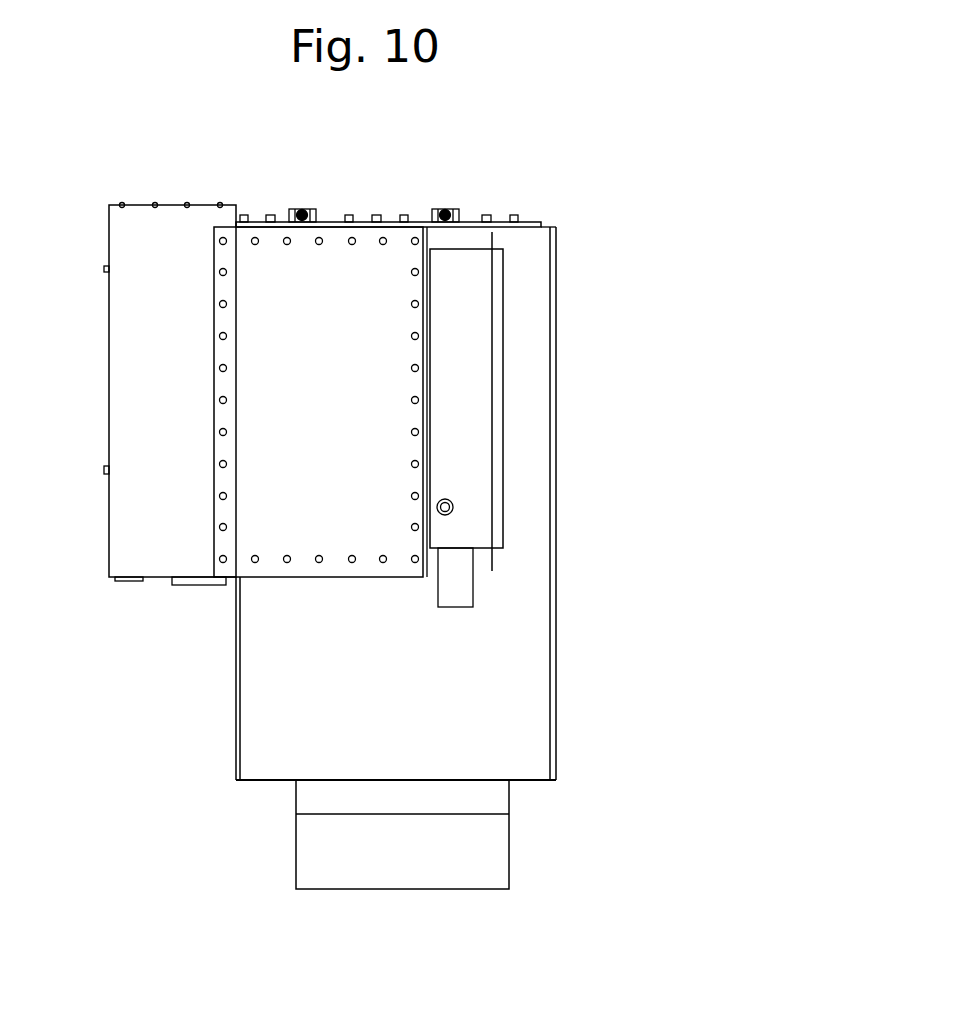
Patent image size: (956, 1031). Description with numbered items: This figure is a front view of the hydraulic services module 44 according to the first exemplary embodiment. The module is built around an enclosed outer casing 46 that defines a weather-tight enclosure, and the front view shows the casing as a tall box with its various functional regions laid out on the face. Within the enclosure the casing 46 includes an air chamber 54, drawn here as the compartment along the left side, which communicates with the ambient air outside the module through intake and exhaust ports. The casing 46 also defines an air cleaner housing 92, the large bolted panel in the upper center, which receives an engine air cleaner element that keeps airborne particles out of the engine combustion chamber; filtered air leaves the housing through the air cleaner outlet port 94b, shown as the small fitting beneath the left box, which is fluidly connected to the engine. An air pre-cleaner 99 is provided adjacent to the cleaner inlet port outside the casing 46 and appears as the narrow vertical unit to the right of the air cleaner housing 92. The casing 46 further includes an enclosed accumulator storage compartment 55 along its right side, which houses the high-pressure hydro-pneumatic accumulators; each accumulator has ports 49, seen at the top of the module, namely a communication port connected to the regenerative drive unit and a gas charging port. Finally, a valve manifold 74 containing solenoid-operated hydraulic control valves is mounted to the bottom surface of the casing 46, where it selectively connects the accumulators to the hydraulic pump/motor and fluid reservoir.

The hydraulic services module 44 is at (566, 413).
The outer casing 46 is at (227, 702).
The accumulator port 49 is at (306, 209).
The air chamber 54 is at (123, 376).
The accumulator storage compartment 55 is at (542, 634).
The valve manifold 74 is at (500, 850).
The air cleaner housing 92 is at (308, 566).
The air cleaner outlet port 94b is at (191, 586).
The air pre-cleaner 99 is at (477, 440).